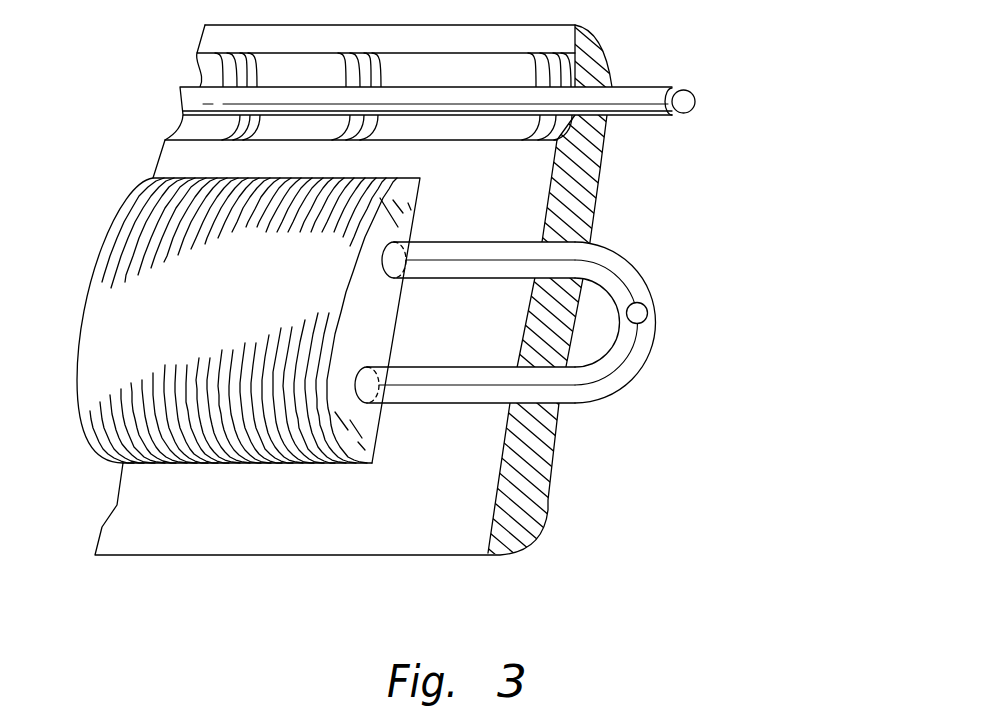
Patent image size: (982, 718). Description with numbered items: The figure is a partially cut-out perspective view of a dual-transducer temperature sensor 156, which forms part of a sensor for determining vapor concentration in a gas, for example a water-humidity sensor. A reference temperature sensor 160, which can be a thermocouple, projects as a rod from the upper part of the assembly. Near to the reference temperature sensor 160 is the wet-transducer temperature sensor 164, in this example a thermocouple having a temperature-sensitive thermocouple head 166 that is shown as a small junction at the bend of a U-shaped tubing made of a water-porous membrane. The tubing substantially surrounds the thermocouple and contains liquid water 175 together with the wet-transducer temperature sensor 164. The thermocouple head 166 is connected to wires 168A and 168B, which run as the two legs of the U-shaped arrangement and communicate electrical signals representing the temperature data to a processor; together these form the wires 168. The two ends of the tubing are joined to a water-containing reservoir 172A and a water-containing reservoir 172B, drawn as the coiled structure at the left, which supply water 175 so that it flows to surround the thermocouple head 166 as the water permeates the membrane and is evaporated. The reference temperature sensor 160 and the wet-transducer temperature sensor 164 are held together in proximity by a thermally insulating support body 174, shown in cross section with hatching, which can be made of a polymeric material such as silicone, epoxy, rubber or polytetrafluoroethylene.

The dual-transducer temperature sensor 156 is at (733, 123).
The reference temperature sensor 160 is at (695, 93).
The wet-transducer temperature sensor 164 is at (642, 287).
The thermocouple head 166 is at (648, 313).
The wires 168 is at (627, 363).
The wire 168A is at (452, 257).
The wire 168B is at (452, 387).
The water-containing reservoir 172A is at (140, 213).
The water-containing reservoir 172B is at (105, 443).
The thermally insulating support body 174 is at (307, 555).
The water 175 is at (630, 267).